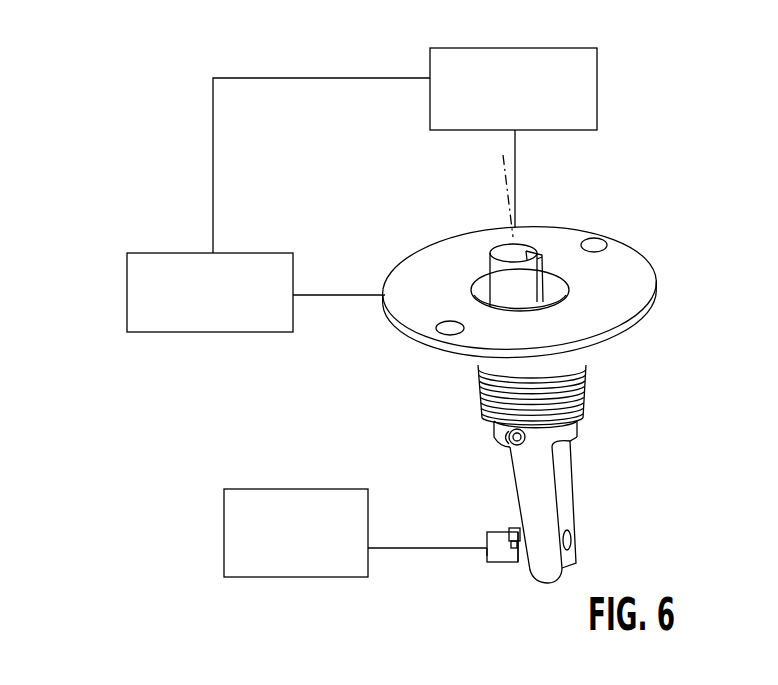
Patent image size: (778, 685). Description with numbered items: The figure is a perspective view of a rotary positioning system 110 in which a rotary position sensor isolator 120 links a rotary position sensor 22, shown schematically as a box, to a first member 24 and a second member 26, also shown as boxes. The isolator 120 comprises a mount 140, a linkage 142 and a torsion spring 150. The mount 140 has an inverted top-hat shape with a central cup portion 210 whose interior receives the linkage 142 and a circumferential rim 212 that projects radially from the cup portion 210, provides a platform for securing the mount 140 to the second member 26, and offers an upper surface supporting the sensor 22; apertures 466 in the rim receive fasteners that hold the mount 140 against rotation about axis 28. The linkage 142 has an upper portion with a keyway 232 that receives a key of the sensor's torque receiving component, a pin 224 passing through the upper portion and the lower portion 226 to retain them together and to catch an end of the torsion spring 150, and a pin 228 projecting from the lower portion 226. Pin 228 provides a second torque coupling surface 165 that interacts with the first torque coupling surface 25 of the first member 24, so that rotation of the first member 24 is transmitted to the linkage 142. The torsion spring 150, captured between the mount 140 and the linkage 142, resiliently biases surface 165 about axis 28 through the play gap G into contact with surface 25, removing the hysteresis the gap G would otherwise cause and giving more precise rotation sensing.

The rotary positioning system 110 is at (105, 142).
The rotary position sensor 22 is at (543, 48).
The second member 26 is at (155, 253).
The first member 24 is at (262, 489).
The axis 28 is at (503, 172).
The rotary position sensor isolator 120 is at (665, 253).
The mount 140 is at (645, 310).
The circumferential rim 212 is at (654, 290).
The central cup portion 210 is at (548, 272).
The keyway 232 is at (532, 244).
The apertures 466 is at (598, 245).
The torsion spring 150 is at (590, 392).
The linkage 142 is at (577, 426).
The lower portion 226 is at (567, 512).
The pin 224 is at (507, 436).
The second torque coupling surface 165 is at (500, 548).
The pin 228 is at (516, 548).
The first torque coupling surface 25 is at (508, 530).
The gap G is at (485, 556).